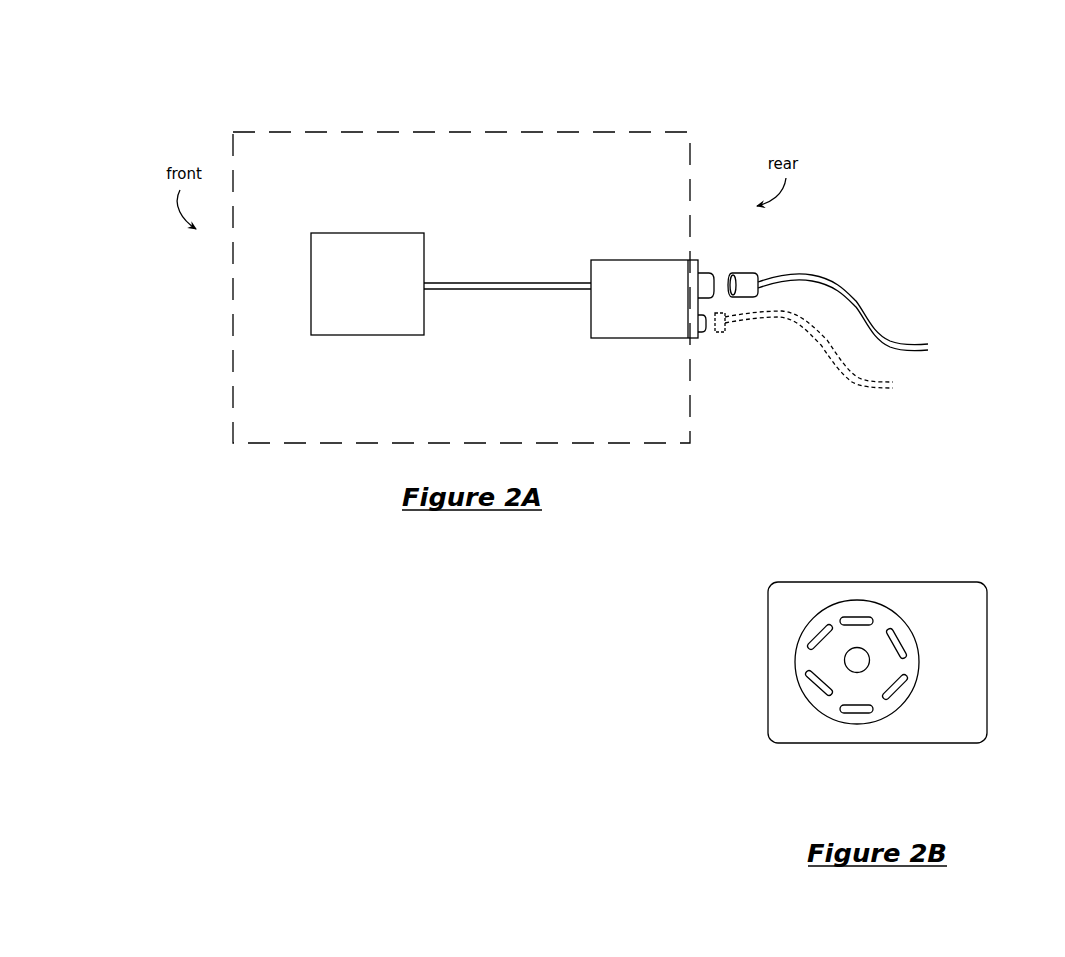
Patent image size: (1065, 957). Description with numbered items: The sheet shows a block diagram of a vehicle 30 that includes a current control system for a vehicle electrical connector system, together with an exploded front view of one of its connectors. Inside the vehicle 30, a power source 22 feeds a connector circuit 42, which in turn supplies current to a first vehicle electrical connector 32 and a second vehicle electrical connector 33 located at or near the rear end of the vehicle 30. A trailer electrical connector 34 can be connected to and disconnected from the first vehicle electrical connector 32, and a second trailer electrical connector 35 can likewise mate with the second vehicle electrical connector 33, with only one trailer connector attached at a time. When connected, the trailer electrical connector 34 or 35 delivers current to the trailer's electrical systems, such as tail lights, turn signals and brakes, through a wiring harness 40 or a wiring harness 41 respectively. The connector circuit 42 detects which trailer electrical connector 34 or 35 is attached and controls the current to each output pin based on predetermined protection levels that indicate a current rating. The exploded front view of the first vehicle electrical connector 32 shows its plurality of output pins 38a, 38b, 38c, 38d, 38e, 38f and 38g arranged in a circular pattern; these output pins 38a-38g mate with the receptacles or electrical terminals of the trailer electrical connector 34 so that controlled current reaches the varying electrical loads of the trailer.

In FIG. 2A, the vehicle 30 is at (575, 69).
In FIG. 2A, the power source 22 is at (372, 233).
In FIG. 2A, the connector circuit 42 is at (639, 260).
In FIG. 2A, the first vehicle electrical connector 32 is at (704, 272).
In FIG. 2B, the first vehicle electrical connector 32 is at (984, 562).
In FIG. 2A, the trailer electrical connector 34 is at (746, 273).
In FIG. 2A, the wiring harness 40 is at (842, 293).
In FIG. 2A, the second vehicle electrical connector 33 is at (704, 333).
In FIG. 2A, the trailer electrical connector 35 is at (722, 333).
In FIG. 2A, the wiring harness 41 is at (812, 333).
In FIG. 2B, the output pin 38a is at (899, 633).
In FIG. 2B, the output pin 38b is at (898, 695).
In FIG. 2B, the output pin 38c is at (855, 715).
In FIG. 2B, the output pin 38d is at (817, 687).
In FIG. 2B, the output pin 38e is at (817, 636).
In FIG. 2B, the output pin 38f is at (853, 616).
In FIG. 2B, the output pin 38g is at (868, 650).